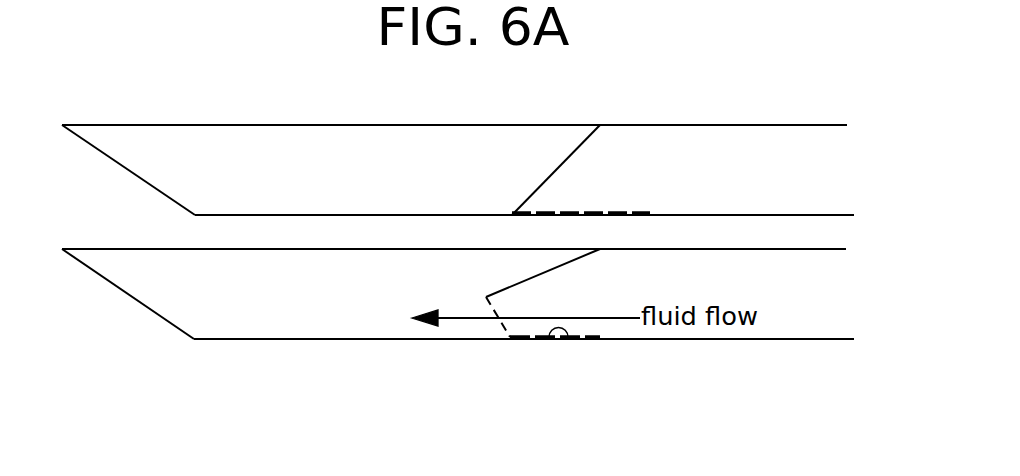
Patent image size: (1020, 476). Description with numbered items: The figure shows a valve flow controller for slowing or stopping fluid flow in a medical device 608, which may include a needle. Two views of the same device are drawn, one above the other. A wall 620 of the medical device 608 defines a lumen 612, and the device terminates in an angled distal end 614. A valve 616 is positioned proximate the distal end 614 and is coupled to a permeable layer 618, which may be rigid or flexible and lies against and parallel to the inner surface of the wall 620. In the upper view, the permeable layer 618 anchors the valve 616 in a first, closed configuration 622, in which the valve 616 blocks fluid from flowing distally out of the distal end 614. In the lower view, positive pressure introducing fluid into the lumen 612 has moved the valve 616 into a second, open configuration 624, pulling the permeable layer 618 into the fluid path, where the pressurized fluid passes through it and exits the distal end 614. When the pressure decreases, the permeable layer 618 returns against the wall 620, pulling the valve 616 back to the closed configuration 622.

The medical device 608 is at (762, 125).
The lumen 612 is at (325, 182).
The distal end 614 is at (124, 172).
The valve 616 is at (557, 169).
The permeable layer 618 is at (628, 213).
The wall 620 is at (240, 125).
The closed configuration 622 is at (823, 177).
The open configuration 624 is at (823, 302).